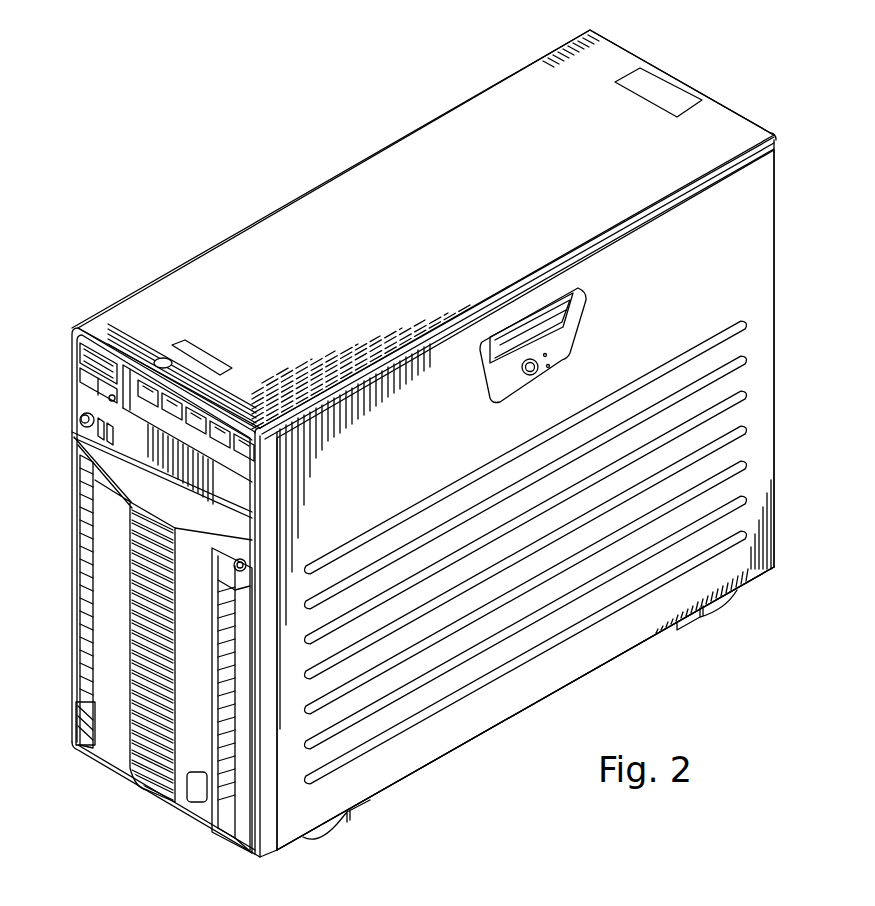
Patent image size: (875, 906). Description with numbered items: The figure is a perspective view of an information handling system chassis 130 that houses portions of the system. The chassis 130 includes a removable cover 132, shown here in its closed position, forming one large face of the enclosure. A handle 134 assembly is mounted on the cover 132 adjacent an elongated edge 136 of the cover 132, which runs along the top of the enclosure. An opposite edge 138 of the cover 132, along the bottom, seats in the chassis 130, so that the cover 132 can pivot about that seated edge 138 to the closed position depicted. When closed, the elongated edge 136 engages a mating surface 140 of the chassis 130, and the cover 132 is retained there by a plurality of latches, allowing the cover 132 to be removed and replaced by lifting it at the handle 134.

The chassis 130 is at (272, 213).
The removable cover 132 is at (777, 258).
The handle 134 is at (580, 346).
The elongated edge 136 is at (702, 180).
The opposite edge 138 is at (585, 675).
The mating surface 140 is at (432, 140).